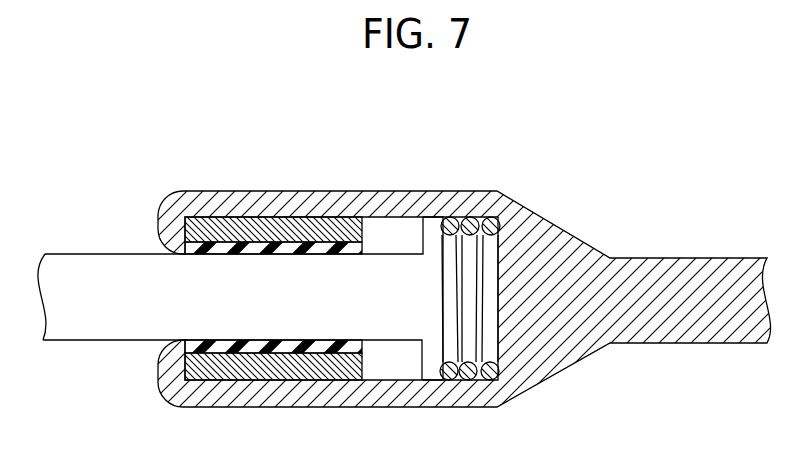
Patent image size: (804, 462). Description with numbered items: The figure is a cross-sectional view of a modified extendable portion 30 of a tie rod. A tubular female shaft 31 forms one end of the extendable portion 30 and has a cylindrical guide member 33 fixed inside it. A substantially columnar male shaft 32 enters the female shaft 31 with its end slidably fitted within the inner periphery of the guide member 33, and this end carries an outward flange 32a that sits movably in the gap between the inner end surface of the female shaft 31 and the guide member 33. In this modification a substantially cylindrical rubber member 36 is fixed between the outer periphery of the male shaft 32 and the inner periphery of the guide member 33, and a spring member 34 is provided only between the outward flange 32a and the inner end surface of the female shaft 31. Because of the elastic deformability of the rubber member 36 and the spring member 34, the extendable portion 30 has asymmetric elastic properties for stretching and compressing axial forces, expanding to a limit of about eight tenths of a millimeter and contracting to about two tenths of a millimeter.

The extendable portion 30 is at (402, 284).
The female shaft 31 is at (542, 233).
The male shaft 32 is at (246, 333).
The outward flange 32a is at (432, 371).
The guide member 33 is at (272, 366).
The spring member 34 is at (467, 382).
The rubber member 36 is at (320, 358).